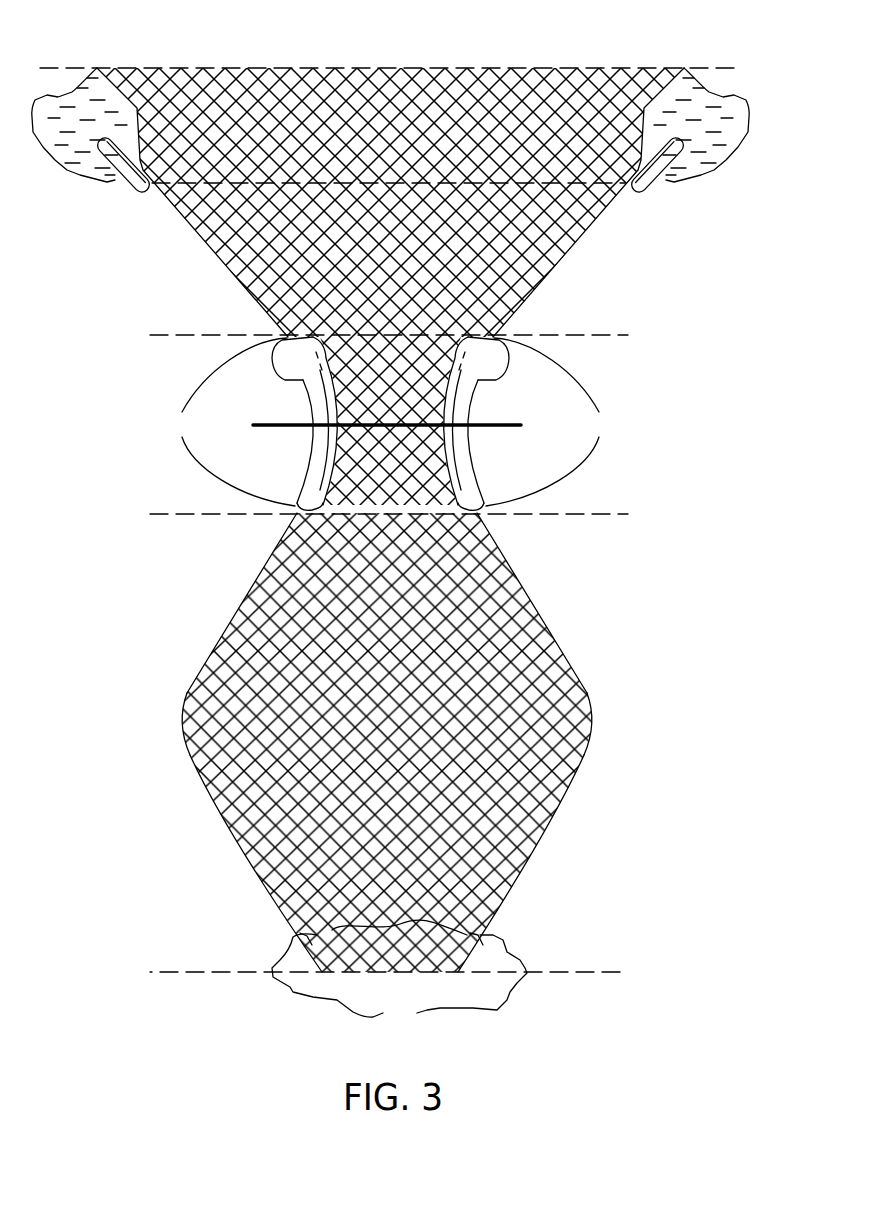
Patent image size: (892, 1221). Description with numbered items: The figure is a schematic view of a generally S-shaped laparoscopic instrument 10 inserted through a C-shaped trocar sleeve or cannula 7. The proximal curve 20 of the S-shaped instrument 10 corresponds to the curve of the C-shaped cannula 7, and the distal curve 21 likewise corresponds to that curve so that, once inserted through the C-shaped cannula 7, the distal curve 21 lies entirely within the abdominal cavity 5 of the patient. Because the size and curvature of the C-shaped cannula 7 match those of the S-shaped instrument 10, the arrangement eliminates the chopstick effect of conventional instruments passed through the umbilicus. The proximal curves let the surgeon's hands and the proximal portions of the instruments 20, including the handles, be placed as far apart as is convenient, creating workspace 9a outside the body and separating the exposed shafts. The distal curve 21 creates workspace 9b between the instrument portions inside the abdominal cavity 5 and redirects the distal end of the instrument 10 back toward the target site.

The workspace 9a is at (315, 107).
The workspace 9b is at (270, 855).
The S-shaped laparoscopic instrument 10 is at (178, 260).
The C-shaped cannula 7 is at (307, 390).
The proximal curve 20 is at (389, 422).
The distal curve 21 is at (183, 723).
The abdominal cavity 5 is at (202, 568).